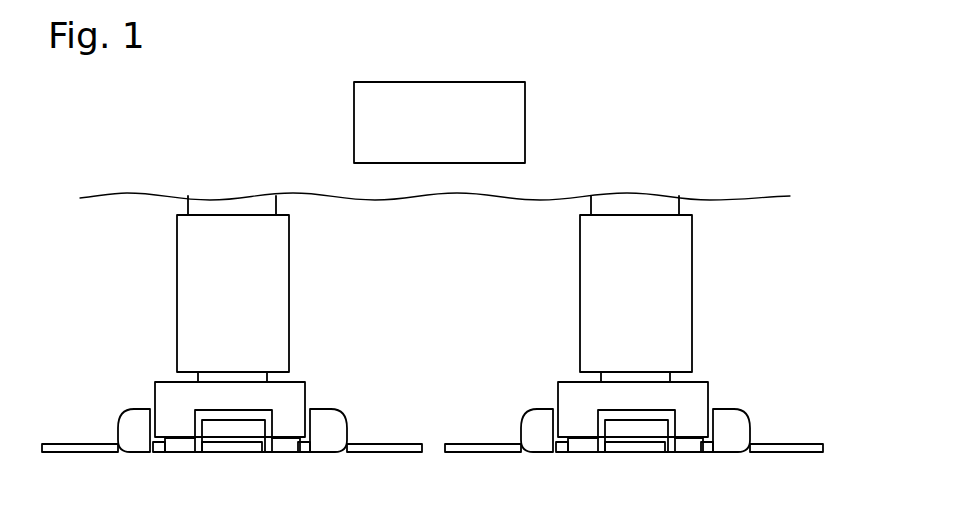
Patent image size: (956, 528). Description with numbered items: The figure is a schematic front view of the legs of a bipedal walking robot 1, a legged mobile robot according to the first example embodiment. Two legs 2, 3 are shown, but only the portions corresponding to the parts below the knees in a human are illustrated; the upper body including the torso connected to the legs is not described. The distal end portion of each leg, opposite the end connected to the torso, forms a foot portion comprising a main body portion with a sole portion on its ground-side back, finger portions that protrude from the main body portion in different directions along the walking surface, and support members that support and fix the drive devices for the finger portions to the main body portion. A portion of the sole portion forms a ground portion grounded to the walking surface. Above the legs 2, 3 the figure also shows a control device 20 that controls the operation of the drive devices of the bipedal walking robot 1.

The bipedal walking robot 1 is at (746, 134).
The leg 2 is at (172, 268).
The leg 3 is at (698, 268).
The control device 20 is at (500, 82).